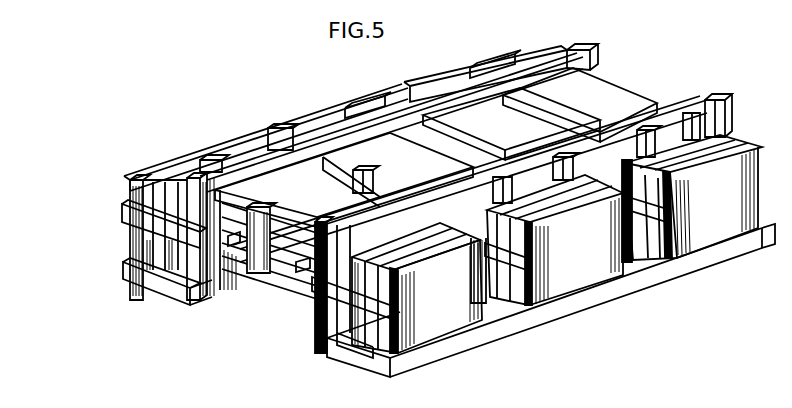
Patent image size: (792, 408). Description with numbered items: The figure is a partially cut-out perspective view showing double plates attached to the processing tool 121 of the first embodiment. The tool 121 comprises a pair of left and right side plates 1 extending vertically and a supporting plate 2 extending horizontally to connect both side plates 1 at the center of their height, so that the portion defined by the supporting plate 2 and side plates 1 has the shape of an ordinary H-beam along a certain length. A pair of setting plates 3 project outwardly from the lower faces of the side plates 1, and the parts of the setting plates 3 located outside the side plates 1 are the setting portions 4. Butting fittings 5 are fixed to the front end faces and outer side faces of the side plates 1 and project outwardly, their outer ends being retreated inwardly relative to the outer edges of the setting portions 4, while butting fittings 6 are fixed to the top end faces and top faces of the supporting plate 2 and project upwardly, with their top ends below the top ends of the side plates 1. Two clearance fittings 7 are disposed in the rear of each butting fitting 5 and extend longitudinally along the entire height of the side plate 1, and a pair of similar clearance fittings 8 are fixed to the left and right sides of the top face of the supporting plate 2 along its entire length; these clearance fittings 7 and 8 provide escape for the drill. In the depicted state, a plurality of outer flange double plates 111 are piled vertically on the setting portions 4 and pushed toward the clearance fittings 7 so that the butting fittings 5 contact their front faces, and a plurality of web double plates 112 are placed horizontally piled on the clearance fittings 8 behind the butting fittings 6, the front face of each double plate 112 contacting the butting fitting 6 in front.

The side plate 1 is at (192, 300).
The supporting plate 2 is at (246, 248).
The setting plate 3 is at (140, 284).
The setting portion 4 is at (165, 288).
The butting fitting 5 is at (122, 206).
The butting fitting 6 is at (340, 182).
The clearance fitting 7 is at (500, 60).
The clearance fitting 8 is at (232, 244).
The outer flange double plate 111 is at (172, 172).
The web double plate 112 is at (580, 80).
The processing tool 121 is at (411, 86).